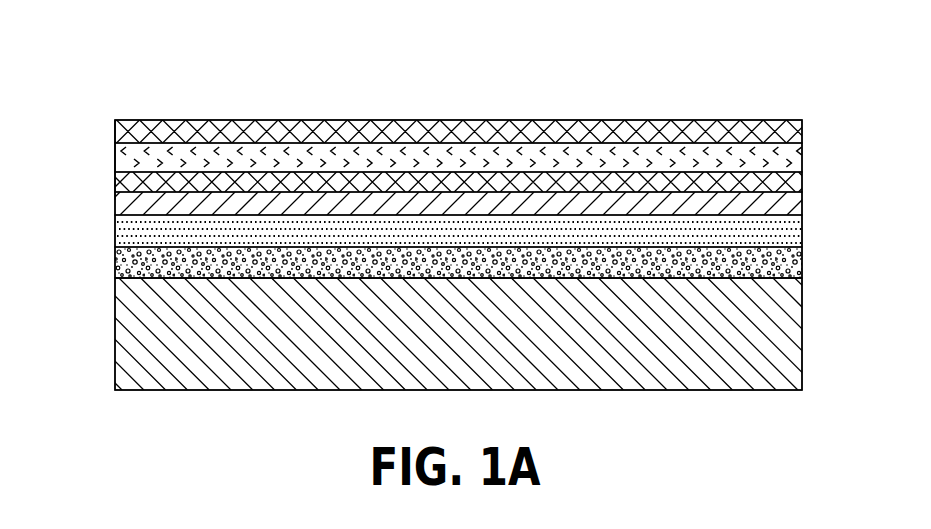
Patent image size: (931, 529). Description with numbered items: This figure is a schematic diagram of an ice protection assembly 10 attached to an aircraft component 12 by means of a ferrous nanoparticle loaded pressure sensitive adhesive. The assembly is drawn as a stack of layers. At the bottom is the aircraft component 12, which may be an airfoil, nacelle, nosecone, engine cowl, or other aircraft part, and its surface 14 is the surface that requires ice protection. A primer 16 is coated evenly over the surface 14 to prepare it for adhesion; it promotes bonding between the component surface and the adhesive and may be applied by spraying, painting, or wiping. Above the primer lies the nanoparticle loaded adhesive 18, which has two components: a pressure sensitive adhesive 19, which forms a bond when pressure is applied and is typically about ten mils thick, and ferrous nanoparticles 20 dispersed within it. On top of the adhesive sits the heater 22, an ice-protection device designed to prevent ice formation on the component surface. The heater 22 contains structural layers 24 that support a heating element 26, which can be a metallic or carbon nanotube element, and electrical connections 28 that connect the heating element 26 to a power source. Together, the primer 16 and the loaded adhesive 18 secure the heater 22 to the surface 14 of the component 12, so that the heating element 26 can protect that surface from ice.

The ice protection assembly 10 is at (254, 56).
The aircraft component 12 is at (788, 342).
The surface 14 is at (153, 290).
The primer 16 is at (802, 266).
The nanoparticle loaded adhesive 18 is at (469, 198).
The pressure sensitive adhesive 19 is at (800, 241).
The nanoparticles 20 is at (797, 206).
The heater 22 is at (78, 107).
The structural layers 24 is at (738, 120).
The heating element 26 is at (790, 155).
The electrical connections 28 is at (113, 164).